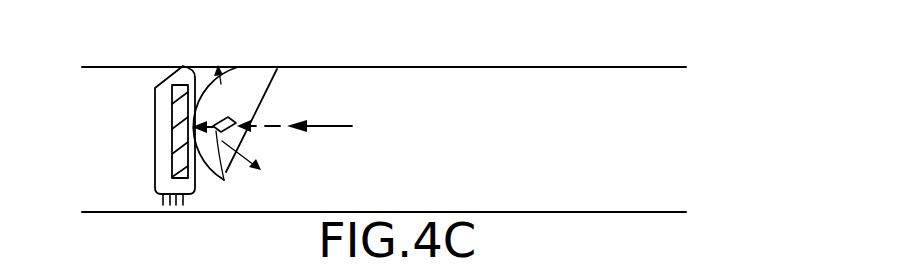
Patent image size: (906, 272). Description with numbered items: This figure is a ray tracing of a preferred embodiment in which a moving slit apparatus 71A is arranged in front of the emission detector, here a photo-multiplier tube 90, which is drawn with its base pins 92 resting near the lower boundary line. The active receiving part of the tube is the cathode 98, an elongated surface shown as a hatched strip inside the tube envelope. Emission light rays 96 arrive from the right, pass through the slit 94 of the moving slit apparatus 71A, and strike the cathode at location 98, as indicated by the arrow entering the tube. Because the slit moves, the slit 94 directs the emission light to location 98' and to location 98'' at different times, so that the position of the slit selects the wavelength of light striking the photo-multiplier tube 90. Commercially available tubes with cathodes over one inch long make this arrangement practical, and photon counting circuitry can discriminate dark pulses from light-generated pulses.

The photo-multiplier tube 90 is at (155, 98).
The tube base pins 92 is at (172, 176).
The cathode 98 is at (144, 131).
The cathode location 98' is at (161, 63).
The cathode location 98'' is at (151, 148).
The slit 94 is at (227, 178).
The moving slit apparatus 71A is at (263, 92).
The emission light rays 96 is at (318, 126).